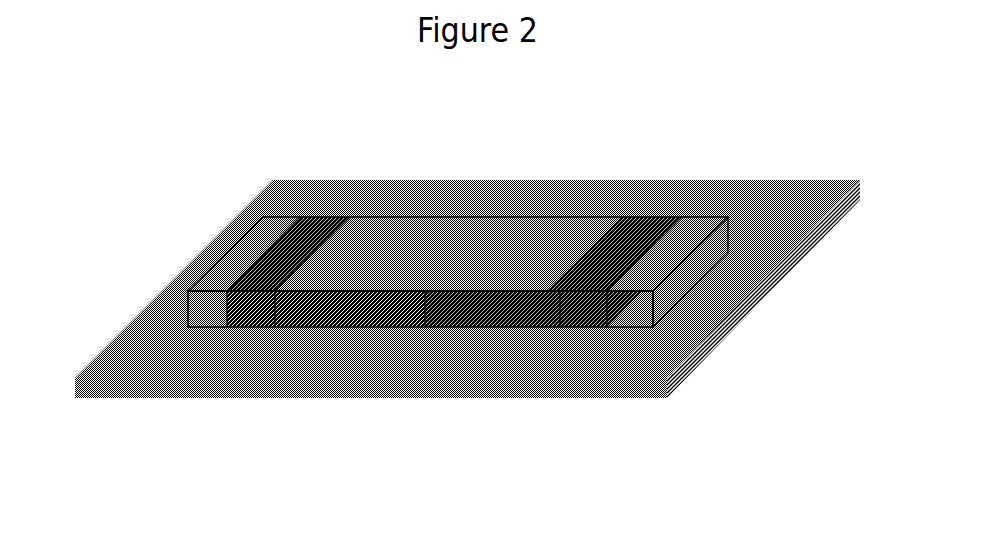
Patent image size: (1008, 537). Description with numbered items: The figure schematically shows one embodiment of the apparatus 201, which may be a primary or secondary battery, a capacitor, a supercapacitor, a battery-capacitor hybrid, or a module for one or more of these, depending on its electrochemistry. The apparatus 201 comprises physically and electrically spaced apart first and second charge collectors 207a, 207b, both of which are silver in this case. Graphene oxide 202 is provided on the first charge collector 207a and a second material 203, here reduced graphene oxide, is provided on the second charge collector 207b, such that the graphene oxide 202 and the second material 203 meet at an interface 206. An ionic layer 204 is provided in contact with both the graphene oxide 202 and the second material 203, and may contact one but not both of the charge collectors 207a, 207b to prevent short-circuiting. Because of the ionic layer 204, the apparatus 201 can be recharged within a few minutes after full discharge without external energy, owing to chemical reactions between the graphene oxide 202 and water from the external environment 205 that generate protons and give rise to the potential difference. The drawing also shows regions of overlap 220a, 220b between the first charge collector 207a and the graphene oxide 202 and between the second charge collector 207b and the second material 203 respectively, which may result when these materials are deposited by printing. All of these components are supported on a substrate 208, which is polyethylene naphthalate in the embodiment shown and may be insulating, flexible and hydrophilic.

The apparatus 201 is at (352, 459).
The graphene oxide 202 is at (295, 267).
The second material 203 is at (628, 222).
The ionic layer 204 is at (438, 230).
The external environment 205 is at (819, 78).
The interface 206 is at (427, 315).
The first charge collector 207a is at (263, 242).
The second charge collector 207b is at (690, 268).
The substrate 208 is at (467, 289).
The region of overlap 220a is at (242, 310).
The region of overlap 220b is at (588, 307).